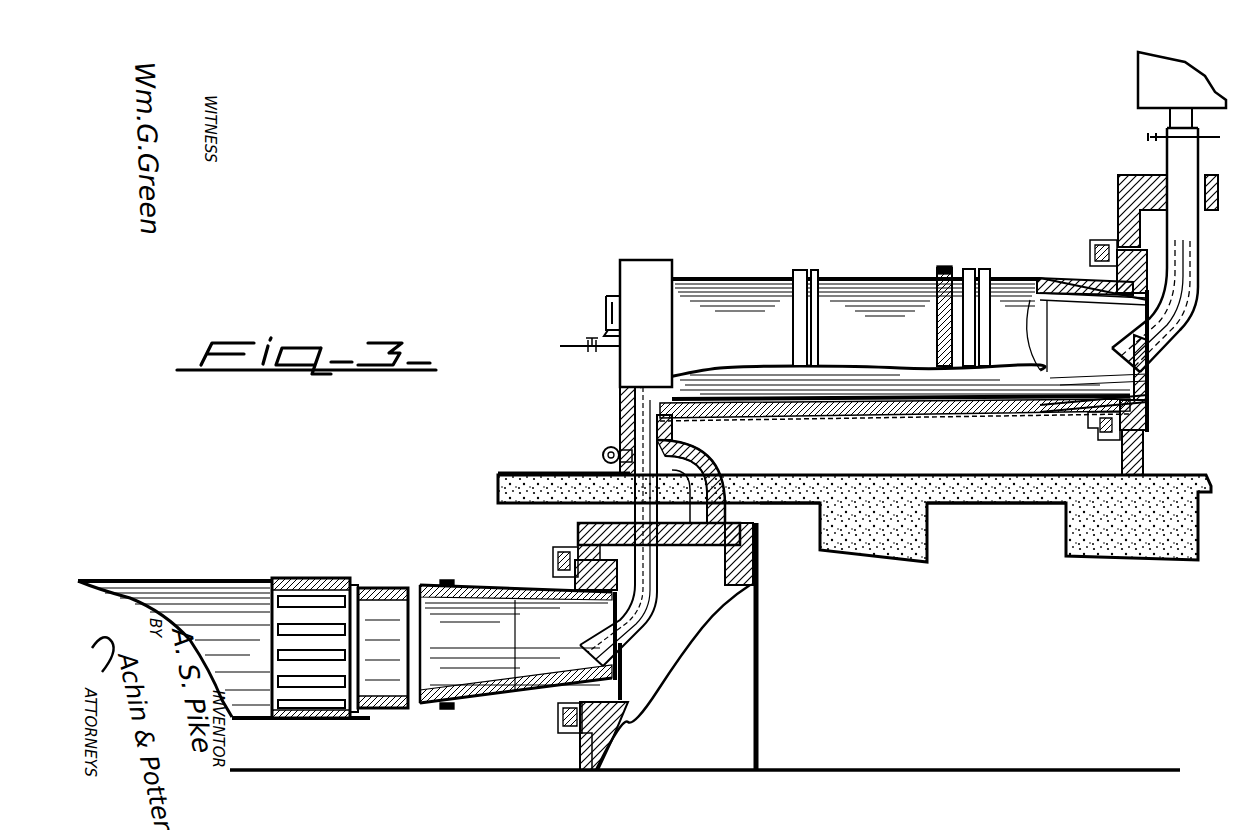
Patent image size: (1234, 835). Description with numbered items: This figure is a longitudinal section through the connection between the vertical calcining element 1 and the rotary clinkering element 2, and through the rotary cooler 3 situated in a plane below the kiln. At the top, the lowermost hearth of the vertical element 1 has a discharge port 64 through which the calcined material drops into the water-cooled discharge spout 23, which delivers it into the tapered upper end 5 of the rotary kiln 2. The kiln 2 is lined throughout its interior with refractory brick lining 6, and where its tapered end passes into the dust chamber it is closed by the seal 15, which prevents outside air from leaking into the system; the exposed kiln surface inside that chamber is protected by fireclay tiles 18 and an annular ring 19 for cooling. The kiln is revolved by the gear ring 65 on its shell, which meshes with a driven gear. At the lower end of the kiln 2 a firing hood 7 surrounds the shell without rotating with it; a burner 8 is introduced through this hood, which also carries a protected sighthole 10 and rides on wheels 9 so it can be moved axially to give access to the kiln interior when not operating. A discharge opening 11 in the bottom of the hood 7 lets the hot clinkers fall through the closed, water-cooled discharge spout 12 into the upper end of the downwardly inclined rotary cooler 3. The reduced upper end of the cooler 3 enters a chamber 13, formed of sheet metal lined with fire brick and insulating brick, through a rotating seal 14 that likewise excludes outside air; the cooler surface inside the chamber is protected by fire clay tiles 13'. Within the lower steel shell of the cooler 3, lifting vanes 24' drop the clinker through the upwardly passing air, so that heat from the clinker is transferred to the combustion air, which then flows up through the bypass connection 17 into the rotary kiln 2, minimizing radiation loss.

The vertical calcining element 1 is at (1158, 80).
The discharge port 64 is at (1182, 118).
The water-cooled discharge spout 23 is at (1198, 296).
The tapered upper end 5 is at (1063, 275).
The fireclay tiles 18 is at (1150, 390).
The annular ring 19 is at (1150, 416).
The seal 15 is at (1098, 428).
The refractory brick lining 6 is at (1090, 300).
The rotary clinkering element 2 is at (876, 280).
The gear ring 65 is at (982, 246).
The firing hood 7 is at (642, 260).
The protected sighthole 10 is at (608, 322).
The burner 8 is at (572, 345).
The discharge opening 11 is at (628, 410).
The wheels 9 is at (604, 450).
The bypass connection 17 is at (708, 462).
The closed discharge spout 12 is at (668, 578).
The chamber 13 is at (667, 646).
The fire clay tiles 13' is at (576, 658).
The rotating seal 14 is at (570, 737).
The rotary cooler 3 is at (258, 580).
The lifting vanes 24' is at (370, 625).